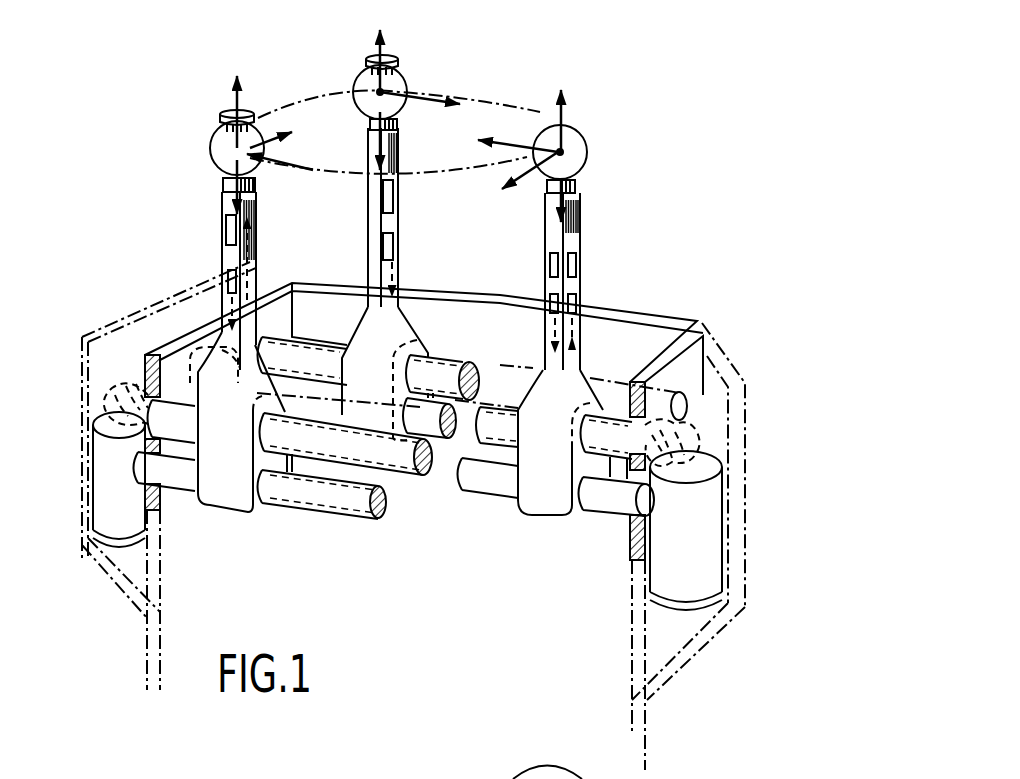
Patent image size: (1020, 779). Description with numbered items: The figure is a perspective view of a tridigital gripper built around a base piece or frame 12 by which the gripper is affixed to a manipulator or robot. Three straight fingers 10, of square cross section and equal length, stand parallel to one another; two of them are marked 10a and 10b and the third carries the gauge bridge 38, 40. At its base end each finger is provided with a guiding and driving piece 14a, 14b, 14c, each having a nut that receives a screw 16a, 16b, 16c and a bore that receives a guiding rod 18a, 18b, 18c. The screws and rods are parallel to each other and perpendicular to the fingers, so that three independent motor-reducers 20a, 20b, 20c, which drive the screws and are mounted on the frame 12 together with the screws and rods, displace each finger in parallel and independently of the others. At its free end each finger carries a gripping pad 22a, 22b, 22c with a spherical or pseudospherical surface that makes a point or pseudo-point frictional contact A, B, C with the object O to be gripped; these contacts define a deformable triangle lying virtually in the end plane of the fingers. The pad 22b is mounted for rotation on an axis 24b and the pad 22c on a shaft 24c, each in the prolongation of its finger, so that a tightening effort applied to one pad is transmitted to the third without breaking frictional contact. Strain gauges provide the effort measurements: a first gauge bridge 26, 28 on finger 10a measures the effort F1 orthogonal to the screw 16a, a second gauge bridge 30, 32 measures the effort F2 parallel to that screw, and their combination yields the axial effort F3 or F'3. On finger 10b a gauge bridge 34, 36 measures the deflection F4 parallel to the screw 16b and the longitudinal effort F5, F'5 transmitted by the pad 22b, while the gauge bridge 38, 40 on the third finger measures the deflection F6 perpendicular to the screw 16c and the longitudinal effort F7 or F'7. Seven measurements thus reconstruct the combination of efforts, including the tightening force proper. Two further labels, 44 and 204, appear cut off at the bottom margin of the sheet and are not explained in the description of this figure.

The finger 10 is at (230, 281).
The finger 10a is at (569, 281).
The finger 10b is at (389, 217).
The base piece or frame 12 is at (699, 320).
The guiding and driving piece 14a is at (537, 497).
The guiding and driving piece 14b is at (363, 335).
The guiding and driving piece 14c is at (218, 493).
The screw 16a is at (500, 432).
The screw 16b is at (447, 362).
The screw 16c is at (405, 480).
The guiding rod 18a is at (613, 497).
The guiding rod 18b is at (432, 425).
The guiding rod 18c is at (318, 503).
The motor-reducer 20a is at (673, 577).
The motor-reducer 20b is at (208, 352).
The motor-reducer 20c is at (113, 522).
The gripping pad 22a is at (590, 153).
The gripping pad 22b is at (409, 77).
The gripping pad 22c is at (213, 158).
The axis 24b is at (394, 50).
The shaft 24c is at (223, 117).
The gauge 26 is at (556, 283).
The gauge 28 is at (593, 270).
The gauge 30 is at (576, 283).
The gauge 32 is at (543, 263).
The gauge 34 is at (393, 227).
The gauge 36 is at (367, 230).
The gauge 38 is at (223, 260).
The gauge 40 is at (258, 238).
The element 44 is at (515, 771).
The element 204 is at (353, 774).
The point of contact A is at (548, 116).
The point of contact B is at (358, 97).
The point of contact C is at (268, 162).
The object to be gripped O is at (293, 103).
The effort F1 is at (522, 186).
The effort F2 is at (502, 141).
The axial effort F3 is at (580, 114).
The axial effort F'3 is at (535, 211).
The deflection F4 is at (427, 88).
The longitudinal effort F5 is at (389, 46).
The longitudinal effort F'5 is at (349, 141).
The deflection F6 is at (293, 126).
The longitudinal effort F7 is at (243, 94).
The longitudinal effort F'7 is at (182, 187).